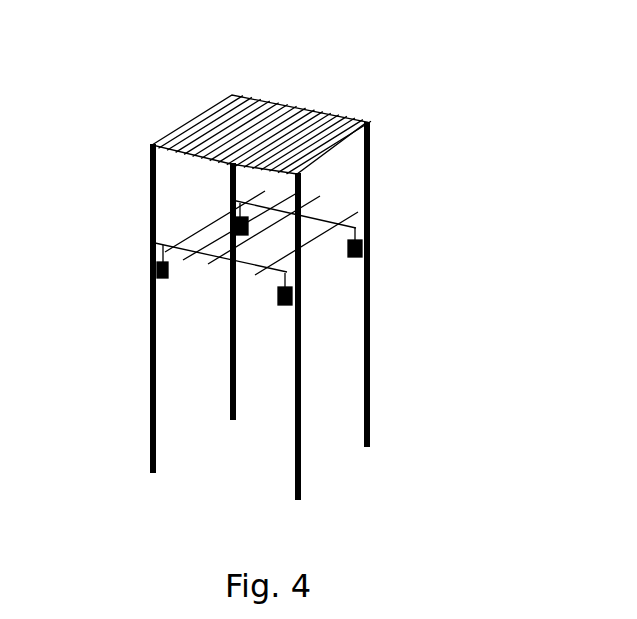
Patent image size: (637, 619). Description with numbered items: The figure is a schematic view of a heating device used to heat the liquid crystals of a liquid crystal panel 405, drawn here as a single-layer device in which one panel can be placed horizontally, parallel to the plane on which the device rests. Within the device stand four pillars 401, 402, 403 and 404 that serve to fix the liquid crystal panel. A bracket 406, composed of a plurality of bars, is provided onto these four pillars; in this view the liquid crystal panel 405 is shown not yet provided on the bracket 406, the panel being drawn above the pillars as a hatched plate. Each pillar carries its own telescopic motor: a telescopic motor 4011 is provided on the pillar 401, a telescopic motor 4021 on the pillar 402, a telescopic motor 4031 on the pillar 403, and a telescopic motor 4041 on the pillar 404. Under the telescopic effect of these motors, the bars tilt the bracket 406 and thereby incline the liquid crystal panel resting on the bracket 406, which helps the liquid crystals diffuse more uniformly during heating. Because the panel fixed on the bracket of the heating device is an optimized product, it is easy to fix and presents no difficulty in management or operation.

The pillar 401 is at (150, 173).
The pillar 402 is at (230, 186).
The pillar 403 is at (369, 140).
The pillar 404 is at (301, 193).
The liquid crystal panel 405 is at (283, 116).
The bracket 406 is at (193, 235).
The telescopic motor 4011 is at (168, 278).
The telescopic motor 4021 is at (239, 203).
The telescopic motor 4031 is at (362, 258).
The telescopic motor 4041 is at (292, 305).